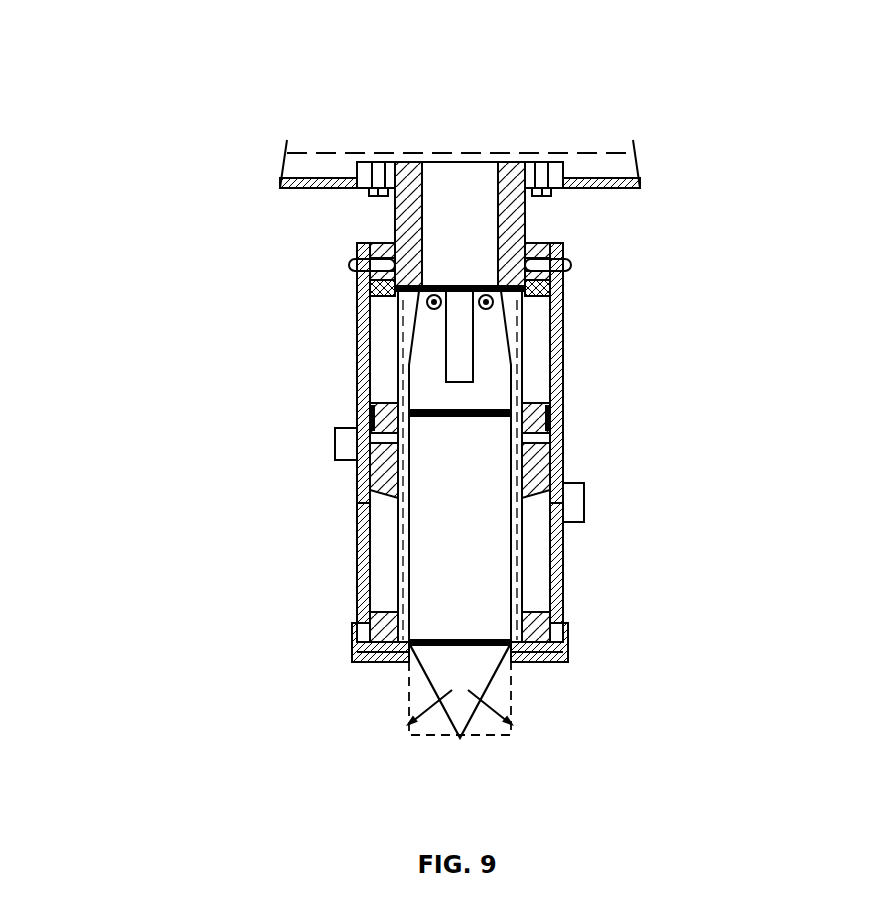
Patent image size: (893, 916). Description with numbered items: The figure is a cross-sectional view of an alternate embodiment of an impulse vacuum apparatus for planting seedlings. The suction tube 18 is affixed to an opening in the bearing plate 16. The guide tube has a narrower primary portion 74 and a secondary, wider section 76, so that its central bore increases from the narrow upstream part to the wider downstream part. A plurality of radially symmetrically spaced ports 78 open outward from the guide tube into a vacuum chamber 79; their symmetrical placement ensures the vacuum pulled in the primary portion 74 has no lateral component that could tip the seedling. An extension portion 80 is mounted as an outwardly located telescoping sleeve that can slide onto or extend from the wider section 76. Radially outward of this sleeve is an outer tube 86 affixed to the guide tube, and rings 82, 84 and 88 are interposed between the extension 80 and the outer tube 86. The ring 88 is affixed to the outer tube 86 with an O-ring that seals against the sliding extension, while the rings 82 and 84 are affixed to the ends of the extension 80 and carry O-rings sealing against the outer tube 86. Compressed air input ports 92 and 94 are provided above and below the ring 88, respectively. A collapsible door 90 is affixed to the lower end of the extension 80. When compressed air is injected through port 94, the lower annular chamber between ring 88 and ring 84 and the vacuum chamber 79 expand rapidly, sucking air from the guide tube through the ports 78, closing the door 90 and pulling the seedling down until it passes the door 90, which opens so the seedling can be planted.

The bearing plate 16 is at (592, 180).
The suction tube 18 is at (273, 337).
The primary portion of the guide tube 74 is at (510, 205).
The secondary wider section of the guide tube 76 is at (563, 278).
The ports 78 is at (563, 325).
The vacuum chamber 79 is at (383, 346).
The extension portion 80 is at (563, 443).
The ring 82 is at (563, 402).
The ring 84 is at (552, 620).
The outer tube 86 is at (368, 568).
The ring 88 is at (385, 482).
The collapsible door 90 is at (425, 678).
The compressed air input port 92 is at (347, 438).
The compressed air input port 94 is at (583, 492).